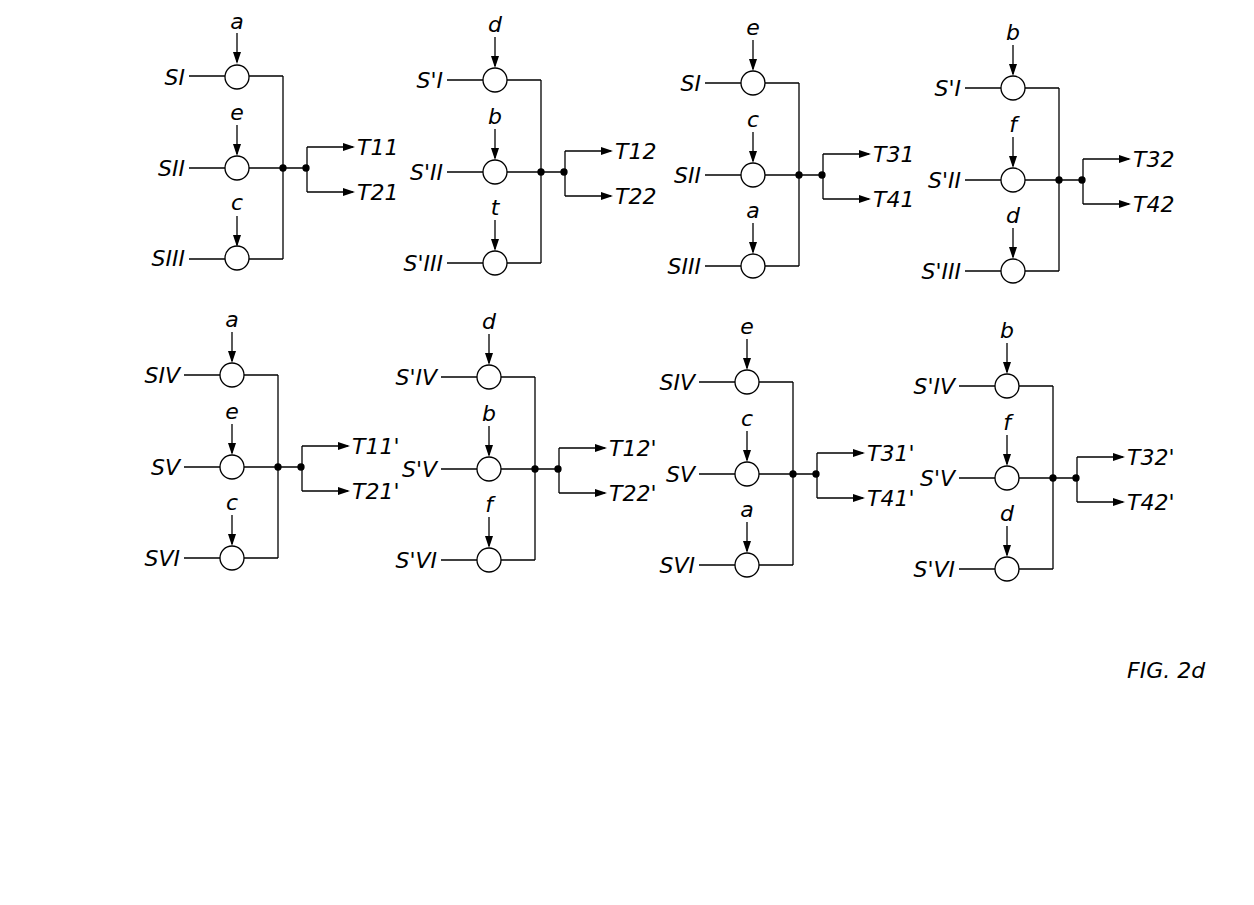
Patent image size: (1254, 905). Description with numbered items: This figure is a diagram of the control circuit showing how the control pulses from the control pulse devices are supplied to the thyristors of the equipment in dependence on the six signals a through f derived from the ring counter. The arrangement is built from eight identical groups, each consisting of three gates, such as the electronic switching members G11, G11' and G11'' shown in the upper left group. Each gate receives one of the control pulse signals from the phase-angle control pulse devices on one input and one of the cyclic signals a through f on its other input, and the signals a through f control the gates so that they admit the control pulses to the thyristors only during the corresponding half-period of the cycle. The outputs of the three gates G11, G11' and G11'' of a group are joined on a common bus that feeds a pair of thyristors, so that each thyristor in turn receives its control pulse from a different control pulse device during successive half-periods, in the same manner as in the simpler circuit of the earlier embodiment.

The electronic switching member G11 is at (268, 63).
The electronic switching member G11' is at (259, 151).
The electronic switching member G11'' is at (262, 241).